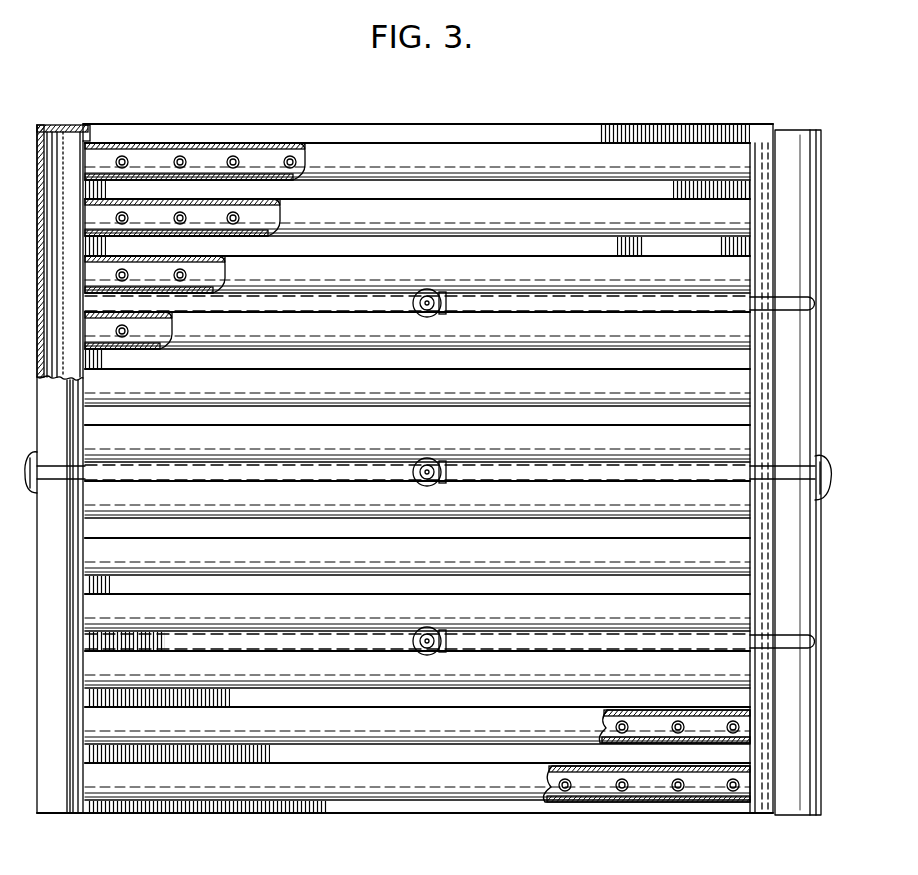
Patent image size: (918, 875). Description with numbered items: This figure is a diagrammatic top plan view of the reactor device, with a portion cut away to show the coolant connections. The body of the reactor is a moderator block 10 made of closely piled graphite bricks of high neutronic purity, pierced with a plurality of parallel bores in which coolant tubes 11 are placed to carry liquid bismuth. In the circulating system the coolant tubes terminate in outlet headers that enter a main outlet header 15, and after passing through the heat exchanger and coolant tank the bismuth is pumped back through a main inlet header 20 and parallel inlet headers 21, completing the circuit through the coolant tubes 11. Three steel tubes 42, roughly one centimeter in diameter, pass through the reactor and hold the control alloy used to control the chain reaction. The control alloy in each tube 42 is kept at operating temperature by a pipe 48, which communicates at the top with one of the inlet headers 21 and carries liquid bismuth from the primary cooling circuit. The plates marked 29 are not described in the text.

The moderator block 10 is at (512, 112).
The coolant tubes 11 is at (178, 157).
The main outlet header 15 is at (786, 148).
The main inlet header 20 is at (60, 813).
The parallel inlet headers 21 is at (297, 143).
The hinge plates 29 is at (210, 158).
The steel tubes 42 is at (788, 304).
The pipe 48 is at (412, 303).